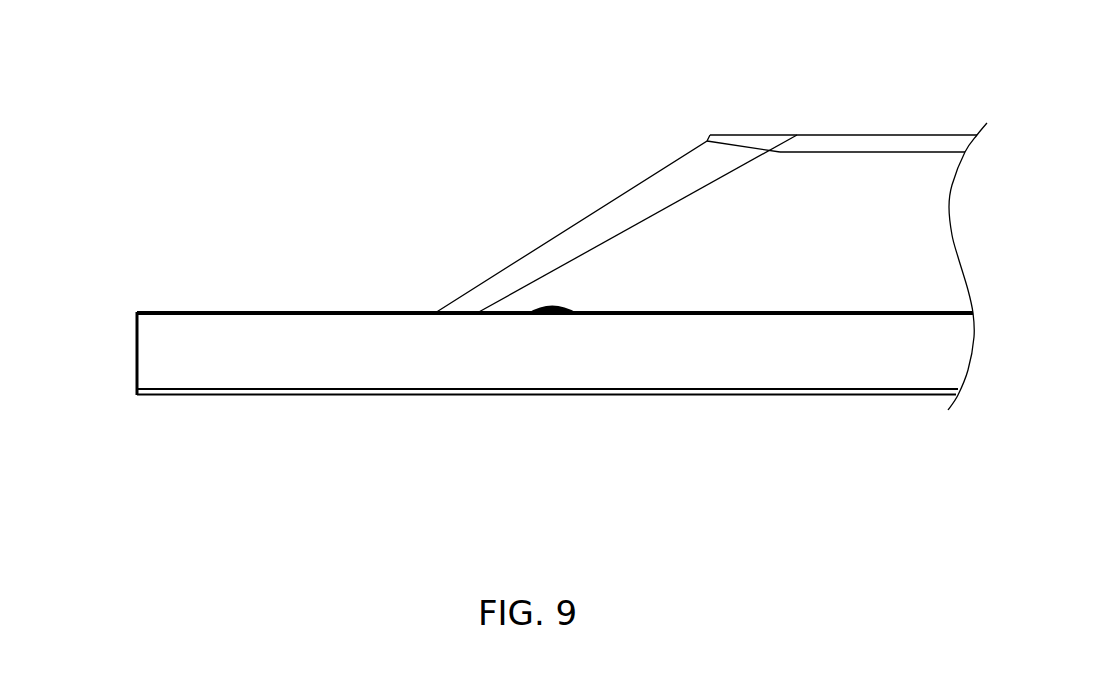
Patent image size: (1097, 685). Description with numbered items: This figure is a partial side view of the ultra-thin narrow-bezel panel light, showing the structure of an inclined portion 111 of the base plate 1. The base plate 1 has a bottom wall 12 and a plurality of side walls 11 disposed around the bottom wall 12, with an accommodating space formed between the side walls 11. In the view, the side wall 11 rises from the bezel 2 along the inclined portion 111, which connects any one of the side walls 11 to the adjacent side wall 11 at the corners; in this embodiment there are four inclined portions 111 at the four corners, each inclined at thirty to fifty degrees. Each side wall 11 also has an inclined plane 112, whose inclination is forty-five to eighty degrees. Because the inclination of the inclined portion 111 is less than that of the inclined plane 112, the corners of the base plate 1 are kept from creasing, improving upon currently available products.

The base plate 1 is at (820, 134).
The side wall 11 is at (675, 237).
The inclined portion 111 is at (563, 223).
The inclined plane 112 is at (912, 247).
The bottom wall 12 is at (912, 133).
The bezel 2 is at (154, 344).